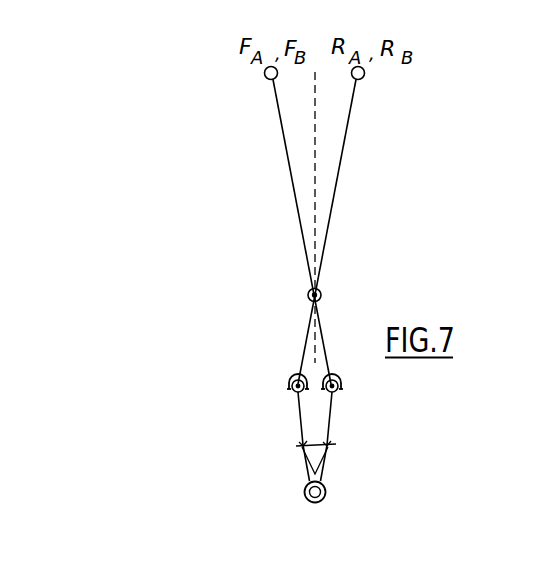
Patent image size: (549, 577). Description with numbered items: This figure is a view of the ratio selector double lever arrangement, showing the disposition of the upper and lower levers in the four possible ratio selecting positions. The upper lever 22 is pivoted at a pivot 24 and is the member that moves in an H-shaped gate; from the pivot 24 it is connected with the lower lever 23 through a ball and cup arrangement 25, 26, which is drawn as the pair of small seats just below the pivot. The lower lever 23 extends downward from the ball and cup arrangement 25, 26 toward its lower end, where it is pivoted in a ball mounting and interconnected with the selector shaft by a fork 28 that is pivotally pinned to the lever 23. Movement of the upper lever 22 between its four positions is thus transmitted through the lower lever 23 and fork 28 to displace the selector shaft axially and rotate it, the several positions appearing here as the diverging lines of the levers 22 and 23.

The upper lever 22 is at (284, 135).
The lower lever 23 is at (333, 402).
The pivot 24 is at (321, 290).
The ball and cup arrangement 25 is at (294, 393).
The ball and cup arrangement 26 is at (291, 381).
The fork 28 is at (326, 462).